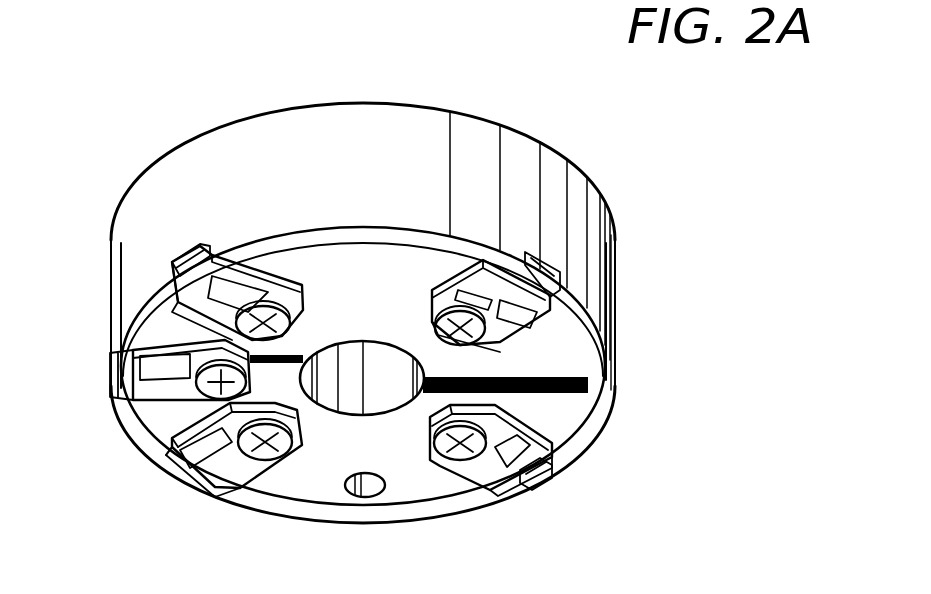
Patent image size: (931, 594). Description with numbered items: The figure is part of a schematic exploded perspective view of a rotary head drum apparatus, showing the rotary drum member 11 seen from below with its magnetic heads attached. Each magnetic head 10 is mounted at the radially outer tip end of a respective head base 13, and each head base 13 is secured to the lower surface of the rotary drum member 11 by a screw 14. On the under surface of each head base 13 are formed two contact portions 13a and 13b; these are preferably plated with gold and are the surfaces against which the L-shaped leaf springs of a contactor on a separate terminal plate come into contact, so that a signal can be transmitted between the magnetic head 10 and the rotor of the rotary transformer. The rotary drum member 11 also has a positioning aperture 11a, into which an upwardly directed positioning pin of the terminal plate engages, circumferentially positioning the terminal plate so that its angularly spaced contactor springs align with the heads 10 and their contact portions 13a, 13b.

The magnetic head 10 is at (180, 258).
The rotary drum member 11 is at (242, 140).
The positioning aperture 11a is at (376, 489).
The head base 13 is at (284, 284).
The contact portion 13a is at (262, 282).
The contact portion 13b is at (180, 300).
The screw 14 is at (205, 397).